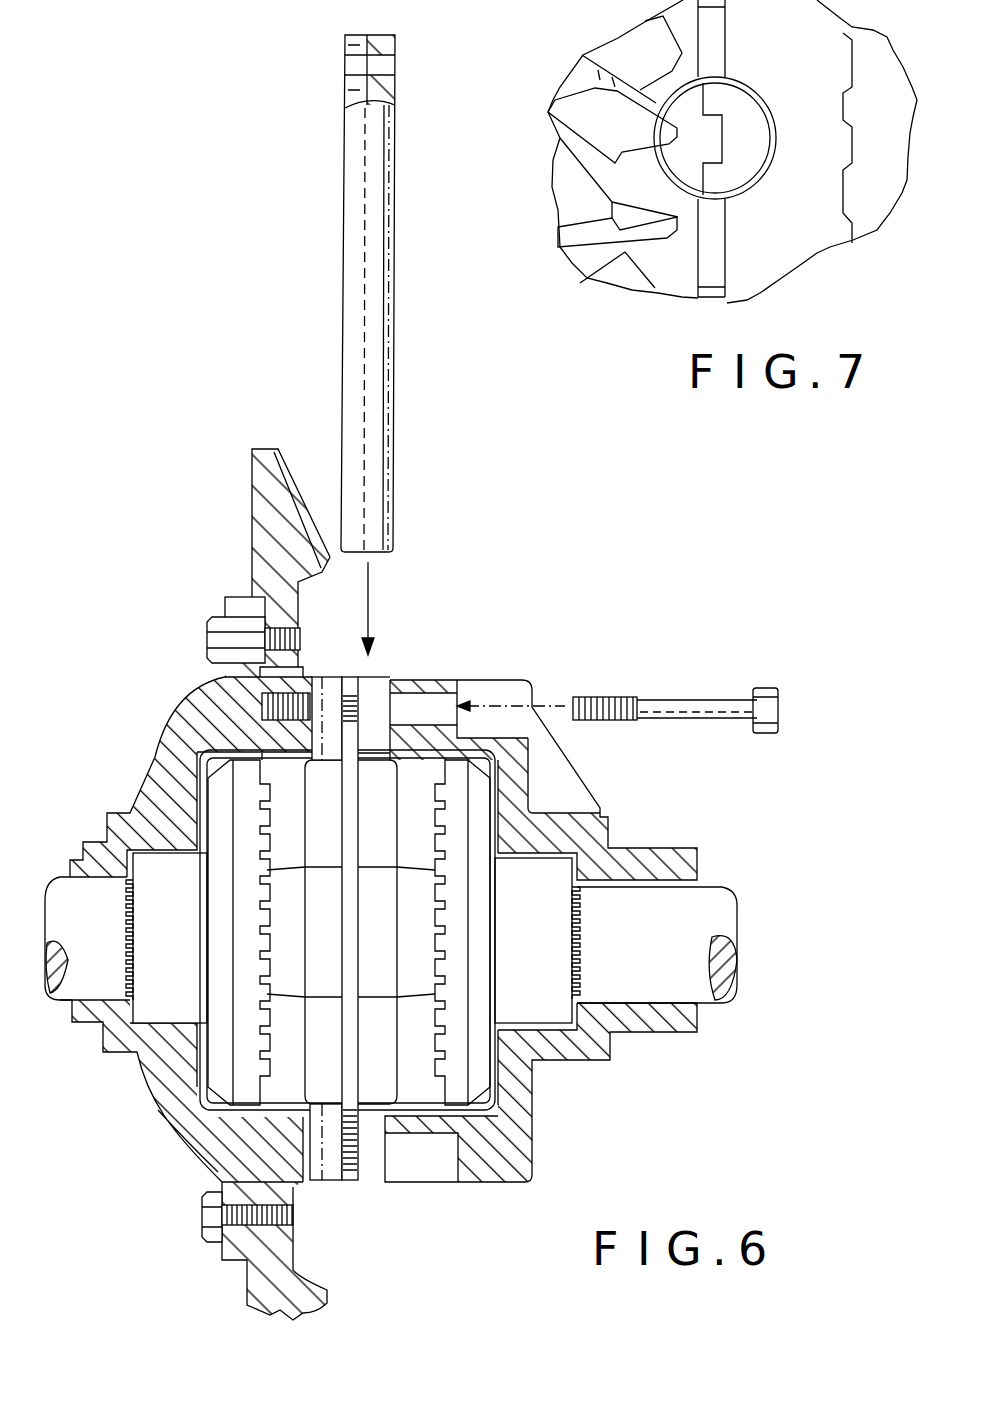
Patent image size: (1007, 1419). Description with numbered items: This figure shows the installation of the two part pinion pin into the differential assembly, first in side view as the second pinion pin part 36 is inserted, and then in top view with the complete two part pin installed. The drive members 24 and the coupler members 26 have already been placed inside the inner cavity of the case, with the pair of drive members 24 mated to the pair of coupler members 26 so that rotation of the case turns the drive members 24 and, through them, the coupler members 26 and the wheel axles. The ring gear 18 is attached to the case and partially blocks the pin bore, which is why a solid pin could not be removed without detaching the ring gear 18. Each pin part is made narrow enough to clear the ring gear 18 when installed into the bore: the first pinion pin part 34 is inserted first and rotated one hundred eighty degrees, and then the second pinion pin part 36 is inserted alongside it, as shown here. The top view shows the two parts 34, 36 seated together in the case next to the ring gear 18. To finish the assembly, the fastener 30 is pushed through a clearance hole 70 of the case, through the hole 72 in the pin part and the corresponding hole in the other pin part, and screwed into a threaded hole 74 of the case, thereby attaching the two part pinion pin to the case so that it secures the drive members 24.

In FIG. 6, the ring gear 18 is at (262, 484).
In FIG. 7, the ring gear 18 is at (628, 217).
In FIG. 6, the drive member 24 is at (417, 1087).
In FIG. 6, the coupler member 26 is at (478, 1085).
In FIG. 6, the fastener 30 is at (673, 703).
In FIG. 6, the first pinion pin part 34 is at (323, 738).
In FIG. 7, the first pinion pin part 34 is at (668, 162).
In FIG. 6, the second pinion pin part 36 is at (390, 503).
In FIG. 7, the second pinion pin part 36 is at (752, 155).
In FIG. 6, the clearance hole 70 is at (413, 707).
In FIG. 6, the threaded hole 72 is at (386, 56).
In FIG. 6, the threaded hole 74 is at (262, 708).